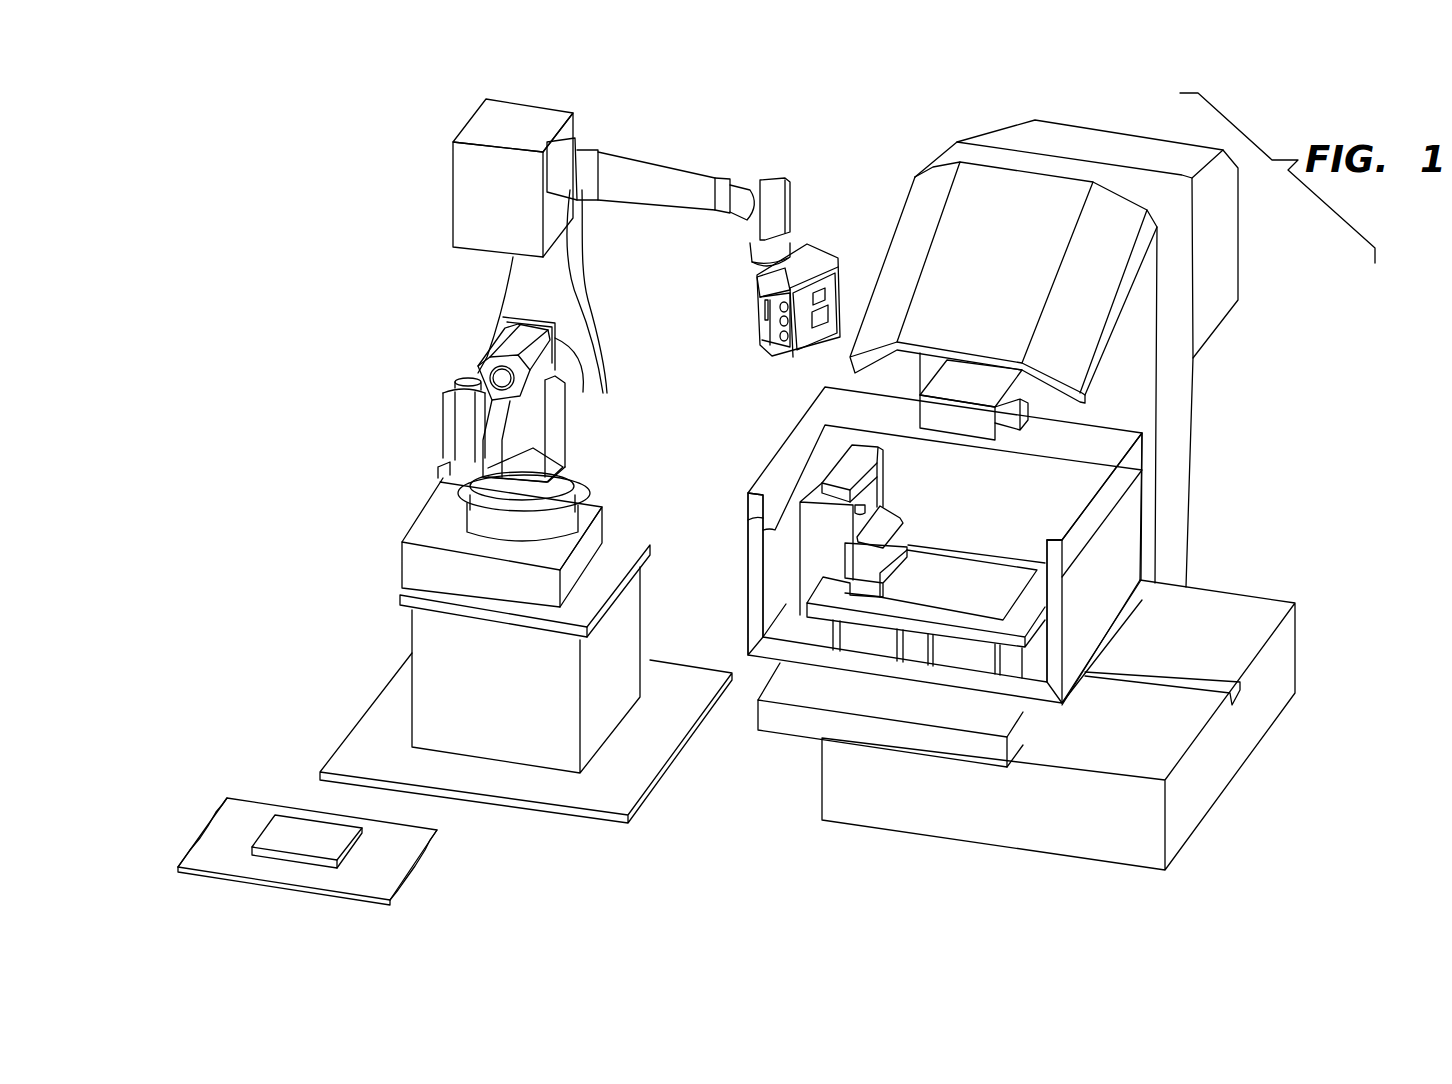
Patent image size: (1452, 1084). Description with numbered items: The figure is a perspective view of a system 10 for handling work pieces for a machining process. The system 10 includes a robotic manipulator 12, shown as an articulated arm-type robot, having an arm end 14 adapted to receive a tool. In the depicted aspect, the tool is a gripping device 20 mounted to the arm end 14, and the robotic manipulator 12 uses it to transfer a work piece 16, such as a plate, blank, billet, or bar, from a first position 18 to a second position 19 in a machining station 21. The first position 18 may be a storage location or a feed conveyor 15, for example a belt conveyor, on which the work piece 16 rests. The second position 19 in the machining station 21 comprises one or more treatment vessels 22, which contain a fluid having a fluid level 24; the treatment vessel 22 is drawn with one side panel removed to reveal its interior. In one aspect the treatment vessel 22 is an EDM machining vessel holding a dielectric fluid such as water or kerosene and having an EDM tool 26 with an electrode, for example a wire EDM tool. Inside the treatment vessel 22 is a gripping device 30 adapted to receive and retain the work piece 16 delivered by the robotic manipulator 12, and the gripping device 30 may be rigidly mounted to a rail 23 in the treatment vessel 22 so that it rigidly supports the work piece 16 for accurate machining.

The system 10 is at (288, 134).
The robotic manipulator 12 is at (440, 318).
The arm end 14 is at (758, 162).
The feed conveyor 15 is at (400, 865).
The work piece 16 is at (296, 835).
The first position 18 is at (244, 778).
The second position 19 is at (907, 544).
The gripping device 20 is at (758, 347).
The machining station 21 is at (812, 457).
The treatment vessel 22 is at (756, 509).
The rail 23 is at (982, 625).
The fluid level 24 is at (1099, 526).
The EDM tool 26 is at (947, 377).
The gripping device 30 is at (896, 490).